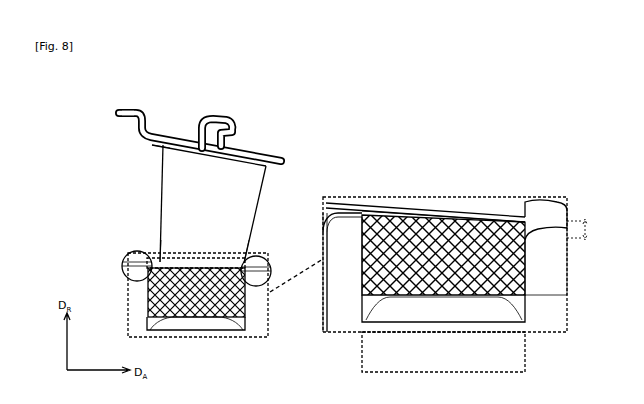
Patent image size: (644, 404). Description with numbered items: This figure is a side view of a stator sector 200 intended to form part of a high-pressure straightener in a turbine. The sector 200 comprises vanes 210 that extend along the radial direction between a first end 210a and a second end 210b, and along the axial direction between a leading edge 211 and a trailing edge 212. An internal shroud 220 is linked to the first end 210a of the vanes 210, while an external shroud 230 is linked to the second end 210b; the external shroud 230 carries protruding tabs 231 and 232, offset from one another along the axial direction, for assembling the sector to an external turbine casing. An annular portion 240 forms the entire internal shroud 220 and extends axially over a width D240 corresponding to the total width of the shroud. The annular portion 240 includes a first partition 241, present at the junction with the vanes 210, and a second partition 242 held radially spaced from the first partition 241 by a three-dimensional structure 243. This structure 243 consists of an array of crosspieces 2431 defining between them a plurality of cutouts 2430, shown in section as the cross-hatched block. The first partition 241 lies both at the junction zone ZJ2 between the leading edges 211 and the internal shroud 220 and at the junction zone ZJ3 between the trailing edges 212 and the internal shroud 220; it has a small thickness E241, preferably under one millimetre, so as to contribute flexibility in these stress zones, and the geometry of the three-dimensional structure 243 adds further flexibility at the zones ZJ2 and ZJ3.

The stator sector 200 is at (97, 130).
The vane 210 is at (185, 194).
The first end 210a is at (241, 260).
The second end 210b is at (158, 150).
The leading edge 211 is at (158, 240).
The trailing edge 212 is at (561, 202).
The internal shroud 220 is at (188, 257).
The external shroud 230 is at (177, 133).
The protruding tab 231 is at (126, 109).
The protruding tab 232 is at (224, 120).
The annular portion 240 is at (127, 291).
The first partition 241 is at (446, 212).
The second partition 242 is at (443, 327).
The three-dimensional structure 243 is at (527, 278).
The cutout 2430 is at (374, 190).
The crosspiece 2431 is at (360, 236).
The junction zone ZJ2 is at (130, 255).
The junction zone ZJ3 is at (262, 257).
The thickness of the first partition E241 is at (589, 229).
The width of the annular portion D240 is at (443, 353).